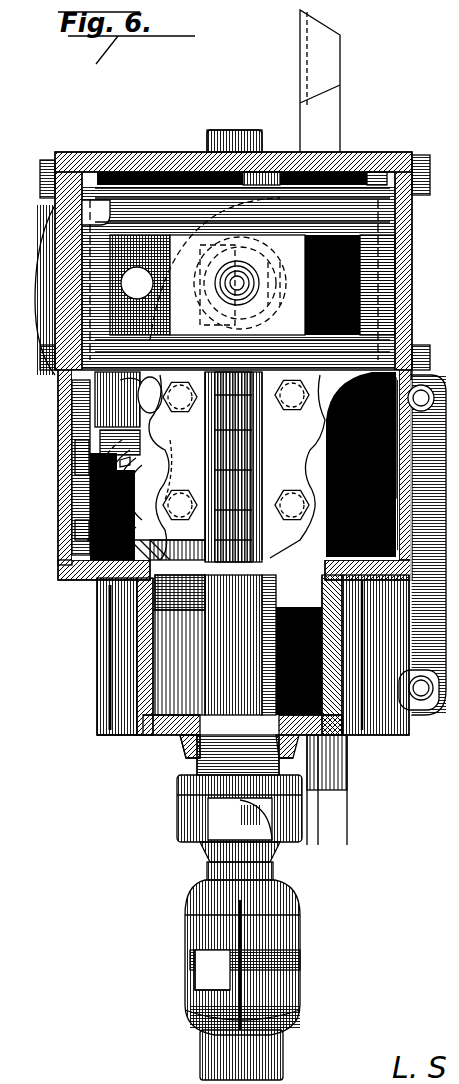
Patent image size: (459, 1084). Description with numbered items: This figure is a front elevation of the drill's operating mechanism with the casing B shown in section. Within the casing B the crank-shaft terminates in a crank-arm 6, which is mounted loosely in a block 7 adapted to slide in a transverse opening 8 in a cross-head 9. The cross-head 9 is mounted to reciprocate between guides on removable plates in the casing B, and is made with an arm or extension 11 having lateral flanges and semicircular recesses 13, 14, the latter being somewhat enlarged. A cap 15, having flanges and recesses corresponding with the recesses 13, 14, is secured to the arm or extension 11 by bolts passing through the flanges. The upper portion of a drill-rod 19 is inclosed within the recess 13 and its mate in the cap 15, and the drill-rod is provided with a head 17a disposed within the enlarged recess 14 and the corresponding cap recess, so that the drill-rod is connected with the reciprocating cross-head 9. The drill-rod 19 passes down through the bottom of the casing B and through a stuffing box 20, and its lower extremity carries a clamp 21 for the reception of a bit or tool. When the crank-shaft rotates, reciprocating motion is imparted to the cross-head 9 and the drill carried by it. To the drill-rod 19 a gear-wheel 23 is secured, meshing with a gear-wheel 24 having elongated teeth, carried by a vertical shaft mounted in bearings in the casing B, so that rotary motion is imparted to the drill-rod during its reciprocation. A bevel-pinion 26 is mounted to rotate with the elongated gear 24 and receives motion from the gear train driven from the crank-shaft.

The casing B is at (240, 433).
The crank-arm 6 is at (237, 283).
The block 7 is at (244, 283).
The transverse opening 8 is at (382, 252).
The cross-head 9 is at (325, 222).
The arm or extension 11 is at (249, 449).
The semicircular recess 13 is at (268, 482).
The semicircular recess 14 is at (268, 452).
The cap 15 is at (270, 470).
The head 17a is at (290, 362).
The drill-rod 19 is at (237, 645).
The stuffing box 20 is at (227, 808).
The clamp 21 is at (259, 980).
The gear-wheel 23 is at (148, 592).
The gear-wheel having elongated teeth 24 is at (72, 492).
The bevel-pinion 26 is at (58, 526).